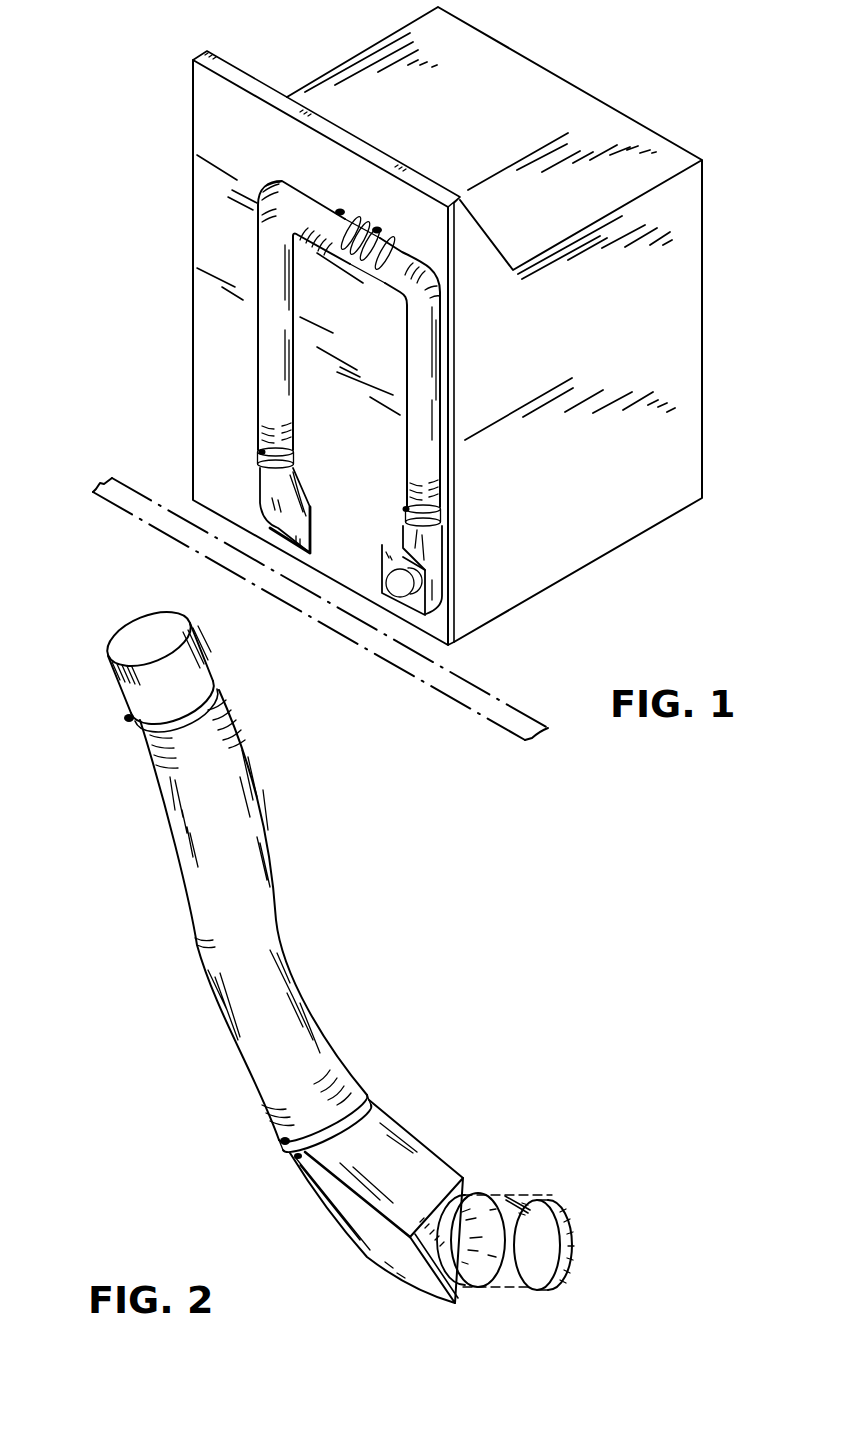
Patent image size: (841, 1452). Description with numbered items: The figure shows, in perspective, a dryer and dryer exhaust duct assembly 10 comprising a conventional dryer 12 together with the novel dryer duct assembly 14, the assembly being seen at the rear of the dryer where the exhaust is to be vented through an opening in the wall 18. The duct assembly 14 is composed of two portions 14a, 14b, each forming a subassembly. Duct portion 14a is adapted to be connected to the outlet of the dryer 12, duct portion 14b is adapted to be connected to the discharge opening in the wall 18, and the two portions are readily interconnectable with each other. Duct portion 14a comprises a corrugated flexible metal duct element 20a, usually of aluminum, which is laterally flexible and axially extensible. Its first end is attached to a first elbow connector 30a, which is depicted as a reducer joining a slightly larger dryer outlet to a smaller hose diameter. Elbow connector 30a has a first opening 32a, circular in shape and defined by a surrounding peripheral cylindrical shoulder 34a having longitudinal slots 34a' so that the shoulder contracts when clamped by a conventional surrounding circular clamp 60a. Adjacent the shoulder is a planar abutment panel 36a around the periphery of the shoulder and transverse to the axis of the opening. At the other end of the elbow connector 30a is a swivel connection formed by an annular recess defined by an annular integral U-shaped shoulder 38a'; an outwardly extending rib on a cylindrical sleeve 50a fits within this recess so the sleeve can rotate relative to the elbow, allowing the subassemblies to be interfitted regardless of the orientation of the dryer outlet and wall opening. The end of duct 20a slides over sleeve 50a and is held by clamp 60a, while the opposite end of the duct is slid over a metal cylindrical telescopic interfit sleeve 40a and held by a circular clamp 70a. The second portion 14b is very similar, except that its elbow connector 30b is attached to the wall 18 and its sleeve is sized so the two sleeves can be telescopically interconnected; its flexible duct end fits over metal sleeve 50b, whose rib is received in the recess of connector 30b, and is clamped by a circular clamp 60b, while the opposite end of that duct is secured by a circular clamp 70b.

In FIG. 1, the dryer and dryer exhaust duct assembly 10 is at (128, 301).
In FIG. 1, the dryer 12 is at (690, 322).
In FIG. 1, the dryer duct assembly 14 is at (215, 257).
In FIG. 1, the duct portion 14a is at (254, 294).
In FIG. 1, the duct portion 14b is at (407, 368).
In FIG. 1, the wall 18 is at (465, 690).
In FIG. 2, the corrugated flexible metal duct element 20a is at (198, 947).
In FIG. 1, the first elbow connector 30a is at (265, 480).
In FIG. 2, the first elbow connector 30a is at (383, 1275).
In FIG. 1, the elbow connector 30b is at (405, 536).
In FIG. 2, the first opening 32a is at (480, 1273).
In FIG. 2, the peripheral cylindrical shoulder 34a is at (419, 1256).
In FIG. 2, the longitudinal slots 34a' is at (550, 1190).
In FIG. 2, the planar abutment panel 36a is at (467, 1192).
In FIG. 2, the annular integral U-shaped shoulder 38a' is at (258, 1177).
In FIG. 1, the telescopic interfit sleeve 40a is at (356, 220).
In FIG. 2, the telescopic interfit sleeve 40a is at (117, 689).
In FIG. 1, the cylindrical sleeve 50a is at (262, 458).
In FIG. 2, the cylindrical sleeve 50a is at (362, 1101).
In FIG. 1, the metal sleeve 50b is at (440, 518).
In FIG. 1, the circular clamp 60a is at (258, 452).
In FIG. 2, the circular clamp 60a is at (282, 1143).
In FIG. 1, the circular clamp 60b is at (407, 507).
In FIG. 1, the circular clamp 70a is at (338, 210).
In FIG. 2, the circular clamp 70a is at (138, 727).
In FIG. 1, the circular clamp 70b is at (385, 212).